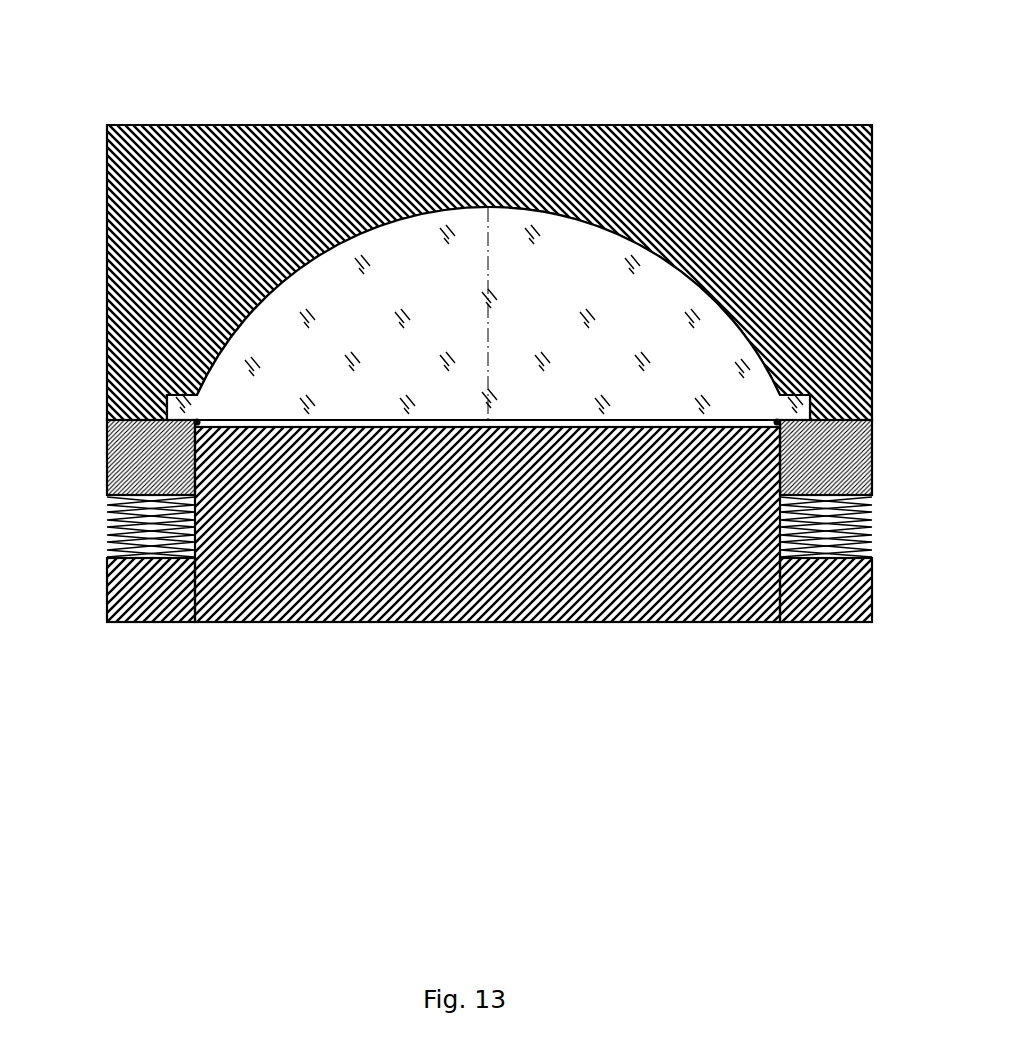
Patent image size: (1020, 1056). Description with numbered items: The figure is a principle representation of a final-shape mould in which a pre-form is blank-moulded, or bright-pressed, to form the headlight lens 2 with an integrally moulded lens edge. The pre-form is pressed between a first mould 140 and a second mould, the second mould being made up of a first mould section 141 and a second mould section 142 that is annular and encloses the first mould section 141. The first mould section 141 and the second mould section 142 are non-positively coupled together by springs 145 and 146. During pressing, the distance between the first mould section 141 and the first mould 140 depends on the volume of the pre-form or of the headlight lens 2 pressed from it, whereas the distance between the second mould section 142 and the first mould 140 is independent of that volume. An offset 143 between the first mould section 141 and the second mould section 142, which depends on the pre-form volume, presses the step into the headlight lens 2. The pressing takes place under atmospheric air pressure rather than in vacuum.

The headlight lens 2 is at (547, 233).
The first mould 140 is at (748, 150).
The first mould section 141 is at (518, 565).
The second mould section 142 is at (122, 460).
The offset 143 is at (197, 422).
The spring 145 is at (178, 532).
The spring 146 is at (823, 532).